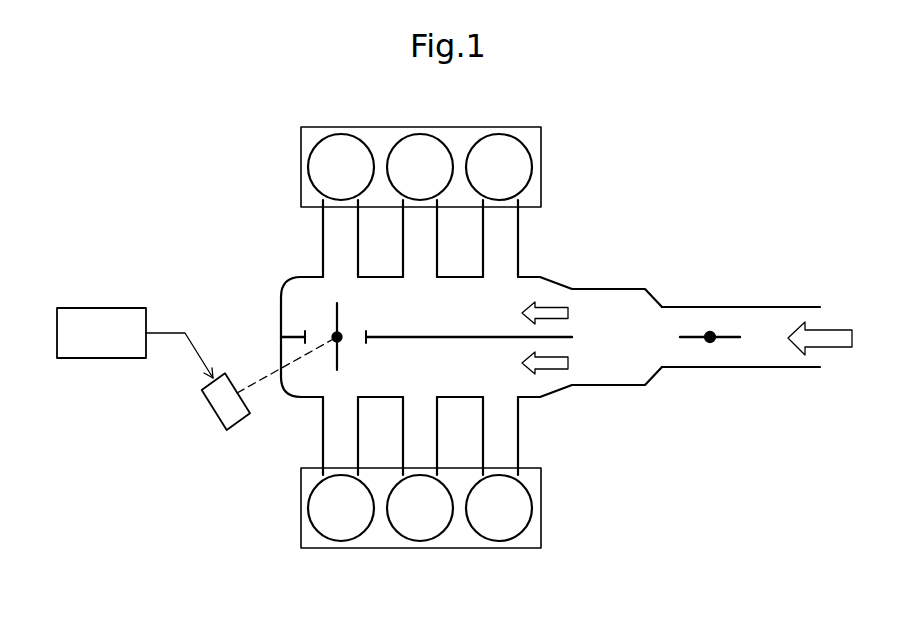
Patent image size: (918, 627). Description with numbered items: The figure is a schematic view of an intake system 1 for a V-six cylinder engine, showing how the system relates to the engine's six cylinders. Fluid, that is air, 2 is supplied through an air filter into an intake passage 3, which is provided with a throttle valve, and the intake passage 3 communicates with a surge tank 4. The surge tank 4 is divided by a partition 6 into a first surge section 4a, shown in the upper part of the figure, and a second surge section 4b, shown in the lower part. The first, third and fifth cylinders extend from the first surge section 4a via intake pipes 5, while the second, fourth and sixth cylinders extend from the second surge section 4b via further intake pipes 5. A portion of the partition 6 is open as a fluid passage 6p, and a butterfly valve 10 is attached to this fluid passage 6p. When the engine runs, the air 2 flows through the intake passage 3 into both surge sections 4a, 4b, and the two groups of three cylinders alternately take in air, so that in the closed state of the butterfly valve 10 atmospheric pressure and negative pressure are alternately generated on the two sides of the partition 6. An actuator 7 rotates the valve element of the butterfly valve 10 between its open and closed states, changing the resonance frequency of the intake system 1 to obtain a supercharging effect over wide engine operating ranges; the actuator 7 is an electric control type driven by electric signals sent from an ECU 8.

The intake system 1 is at (569, 127).
The fluid (air) 2 is at (840, 330).
The intake passage 3 is at (729, 368).
The surge tank 4 is at (552, 277).
The first surge section 4a is at (490, 320).
The second surge section 4b is at (490, 378).
The intake pipes 5 is at (490, 212).
The partition 6 is at (572, 339).
The fluid passage 6p is at (313, 330).
The actuator 7 is at (207, 408).
The ECU 8 is at (96, 307).
The butterfly valve 10 is at (328, 307).